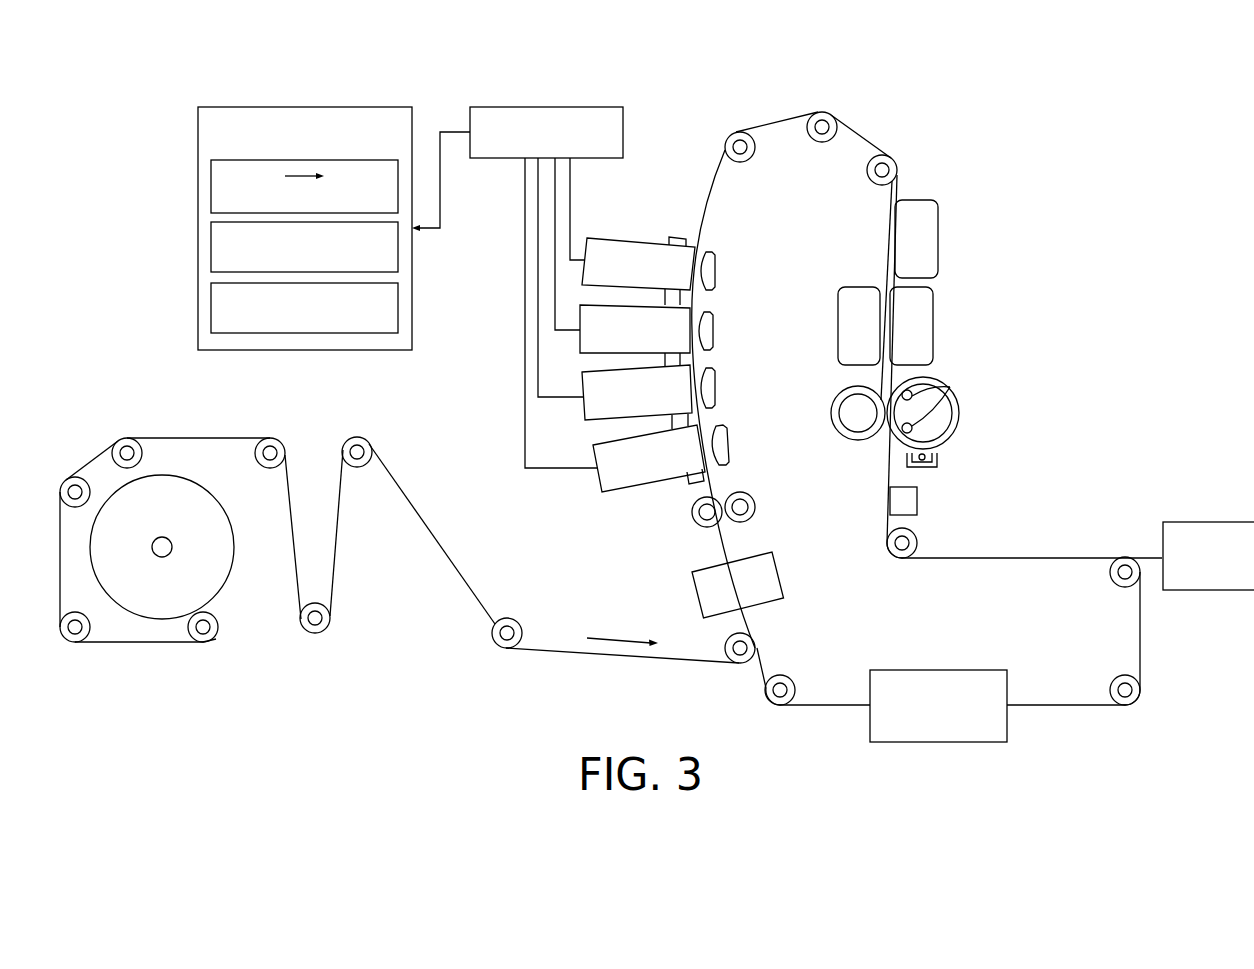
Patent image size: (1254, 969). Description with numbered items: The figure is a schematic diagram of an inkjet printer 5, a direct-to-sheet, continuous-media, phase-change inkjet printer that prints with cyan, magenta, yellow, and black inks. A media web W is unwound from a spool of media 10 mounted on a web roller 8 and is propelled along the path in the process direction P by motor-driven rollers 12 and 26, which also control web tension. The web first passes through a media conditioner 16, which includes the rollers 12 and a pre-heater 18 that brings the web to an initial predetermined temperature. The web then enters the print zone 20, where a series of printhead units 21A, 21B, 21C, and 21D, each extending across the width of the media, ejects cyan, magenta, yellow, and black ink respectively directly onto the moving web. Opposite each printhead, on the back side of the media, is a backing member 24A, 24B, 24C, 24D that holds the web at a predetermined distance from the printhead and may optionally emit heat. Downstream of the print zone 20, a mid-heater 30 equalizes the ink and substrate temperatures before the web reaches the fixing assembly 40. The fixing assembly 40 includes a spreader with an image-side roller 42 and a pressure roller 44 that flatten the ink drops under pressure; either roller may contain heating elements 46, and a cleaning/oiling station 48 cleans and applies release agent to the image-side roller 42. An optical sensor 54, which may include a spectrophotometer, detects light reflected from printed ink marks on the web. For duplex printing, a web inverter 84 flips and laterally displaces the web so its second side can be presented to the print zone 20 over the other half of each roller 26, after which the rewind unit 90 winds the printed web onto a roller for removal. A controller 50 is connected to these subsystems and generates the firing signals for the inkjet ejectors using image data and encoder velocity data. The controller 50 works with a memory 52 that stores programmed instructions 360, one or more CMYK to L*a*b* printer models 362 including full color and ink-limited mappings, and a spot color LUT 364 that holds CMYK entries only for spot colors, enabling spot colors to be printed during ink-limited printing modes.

The inkjet printer 5 is at (126, 104).
The web roller 8 is at (165, 557).
The spool of media 10 is at (228, 515).
The rollers 12 is at (362, 468).
The media conditioner 16 is at (512, 574).
The pre-heater 18 is at (785, 576).
The print zone 20 is at (513, 294).
The printhead unit 21A is at (650, 488).
The printhead unit 21B is at (605, 423).
The printhead unit 21C is at (598, 356).
The printhead unit 21D is at (603, 237).
The backing member 24A is at (729, 446).
The backing member 24B is at (716, 387).
The backing member 24C is at (714, 332).
The backing member 24D is at (716, 272).
The rollers 26 is at (754, 158).
The mid-heater 30 is at (952, 232).
The fixing assembly 40 is at (956, 351).
The image-side roller 42 is at (957, 420).
The pressure roller 44 is at (850, 427).
The heating elements 46 is at (947, 386).
The cleaning/oiling station 48 is at (922, 471).
The controller 50 is at (547, 107).
The memory 52 is at (313, 107).
The optical sensor 54 is at (917, 508).
The web inverter 84 is at (937, 670).
The rewind unit 90 is at (1205, 522).
The programmed instructions 360 is at (211, 307).
The CMYK to device independent color space printer models 362 is at (211, 186).
The spot color LUT 364 is at (211, 248).
The media web W is at (192, 437).
The process direction P is at (622, 638).